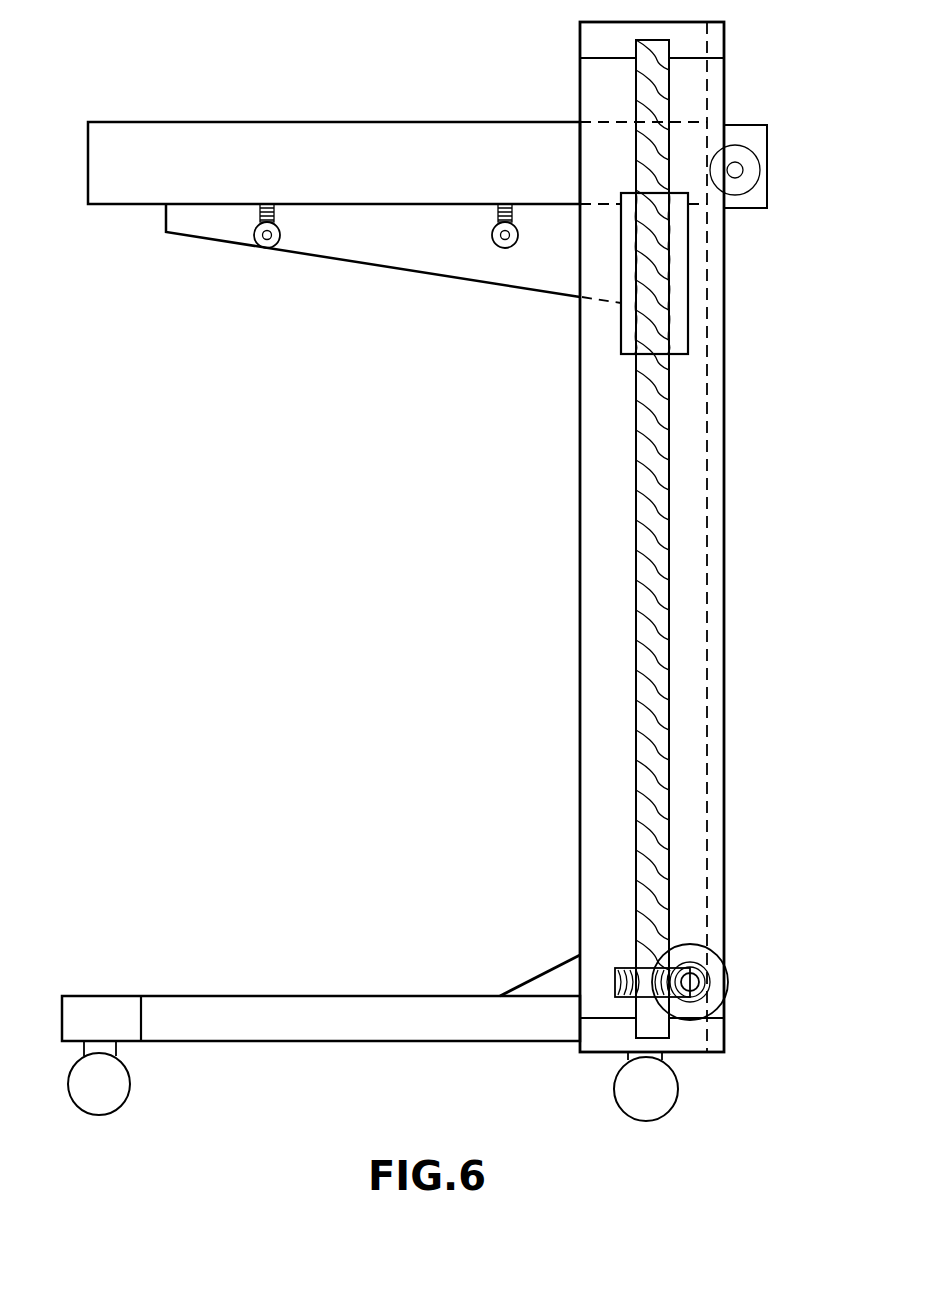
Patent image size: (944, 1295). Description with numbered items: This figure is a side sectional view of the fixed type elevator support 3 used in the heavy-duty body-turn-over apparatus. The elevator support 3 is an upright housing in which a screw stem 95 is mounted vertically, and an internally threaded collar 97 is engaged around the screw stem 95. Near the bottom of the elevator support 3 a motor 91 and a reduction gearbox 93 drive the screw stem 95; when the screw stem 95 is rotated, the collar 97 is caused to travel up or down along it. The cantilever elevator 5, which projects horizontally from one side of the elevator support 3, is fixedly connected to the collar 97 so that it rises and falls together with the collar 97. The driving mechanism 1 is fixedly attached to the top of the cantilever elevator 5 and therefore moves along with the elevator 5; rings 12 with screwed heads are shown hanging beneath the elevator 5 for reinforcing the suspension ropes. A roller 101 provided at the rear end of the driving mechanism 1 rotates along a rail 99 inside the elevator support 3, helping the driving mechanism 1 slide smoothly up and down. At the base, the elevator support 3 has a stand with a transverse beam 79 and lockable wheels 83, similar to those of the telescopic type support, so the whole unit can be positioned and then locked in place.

The driving mechanism 1 is at (338, 148).
The fixed type elevator support 3 is at (724, 607).
The cantilever elevator 5 is at (442, 253).
The ring 12 is at (506, 247).
The transverse beam 79 is at (265, 1030).
The lockable wheel 83 is at (658, 1095).
The motor 91 is at (726, 980).
The reduction gearbox 93 is at (625, 975).
The screw stem 95 is at (636, 595).
The internally threaded collar 97 is at (688, 308).
The rail 99 is at (709, 408).
The roller 101 is at (758, 152).